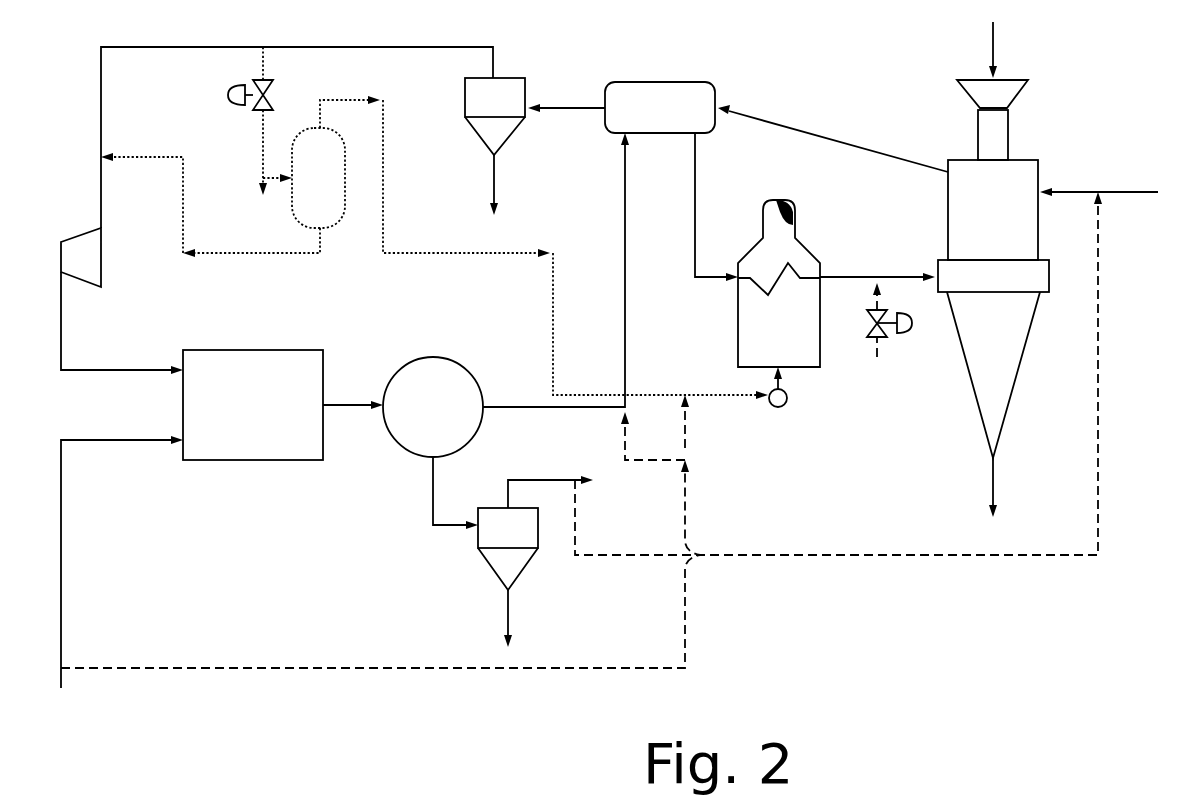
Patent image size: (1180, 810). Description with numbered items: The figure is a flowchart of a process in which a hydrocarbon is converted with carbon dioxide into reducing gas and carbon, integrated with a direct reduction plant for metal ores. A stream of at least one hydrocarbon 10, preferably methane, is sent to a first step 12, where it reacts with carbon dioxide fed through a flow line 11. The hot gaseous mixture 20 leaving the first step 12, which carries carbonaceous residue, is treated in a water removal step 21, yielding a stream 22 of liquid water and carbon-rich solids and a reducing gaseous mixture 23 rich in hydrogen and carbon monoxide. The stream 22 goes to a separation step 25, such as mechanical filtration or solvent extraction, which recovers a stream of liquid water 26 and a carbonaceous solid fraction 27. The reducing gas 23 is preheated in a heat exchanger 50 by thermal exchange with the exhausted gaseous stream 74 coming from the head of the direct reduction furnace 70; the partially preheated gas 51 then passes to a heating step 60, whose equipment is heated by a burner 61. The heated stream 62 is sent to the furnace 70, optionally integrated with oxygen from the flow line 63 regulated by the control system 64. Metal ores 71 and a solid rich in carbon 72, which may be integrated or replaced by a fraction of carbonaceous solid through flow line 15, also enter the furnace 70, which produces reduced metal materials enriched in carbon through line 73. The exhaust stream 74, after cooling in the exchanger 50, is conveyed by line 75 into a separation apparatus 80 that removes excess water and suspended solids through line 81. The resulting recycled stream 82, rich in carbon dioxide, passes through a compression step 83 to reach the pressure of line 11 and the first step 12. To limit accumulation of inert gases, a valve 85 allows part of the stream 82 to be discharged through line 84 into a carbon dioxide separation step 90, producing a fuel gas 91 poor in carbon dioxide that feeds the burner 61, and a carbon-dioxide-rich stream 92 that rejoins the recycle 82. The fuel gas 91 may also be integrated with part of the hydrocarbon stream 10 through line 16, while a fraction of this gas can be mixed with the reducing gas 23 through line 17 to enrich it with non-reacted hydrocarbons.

The hydrocarbon stream 10 is at (61, 530).
The carbon dioxide flow line 11 is at (61, 332).
The first step 12 is at (253, 405).
The carbonaceous solid flow line 15 is at (878, 557).
The hydrocarbon fuel line 16 is at (398, 670).
The hydrocarbon enrichment line 17 is at (665, 460).
The gaseous mixture 20 is at (335, 405).
The water removal step 21 is at (433, 407).
The liquid water and solids stream 22 is at (433, 472).
The reducing gaseous mixture 23 is at (560, 407).
The separation step 25 is at (508, 549).
The liquid water stream 26 is at (509, 605).
The carbonaceous solid fraction 27 is at (550, 478).
The heat exchanger 50 is at (660, 107).
The partially preheated reducing gas 51 is at (695, 168).
The heating step 60 is at (779, 283).
The burner 61 is at (787, 398).
The heated reducing gas stream 62 is at (828, 275).
The oxygen flow line 63 is at (880, 350).
The control system 64 is at (912, 323).
The direct reduction furnace 70 is at (993, 269).
The metal ores feed 71 is at (993, 55).
The solid rich in carbon 72 is at (1110, 195).
The reduced metal materials line 73 is at (993, 480).
The exhausted gaseous stream line 74 is at (815, 135).
The cooled gas line 75 is at (548, 108).
The separation apparatus 80 is at (495, 116).
The water and solids removal line 81 is at (494, 172).
The recycled gaseous stream 82 is at (345, 47).
The compression step 83 is at (82, 237).
The discharge line 84 is at (263, 138).
The valve 85 is at (228, 95).
The CO2 separation step 90 is at (318, 178).
The fuel gas line 91 is at (383, 200).
The CO2-rich stream 92 is at (248, 255).